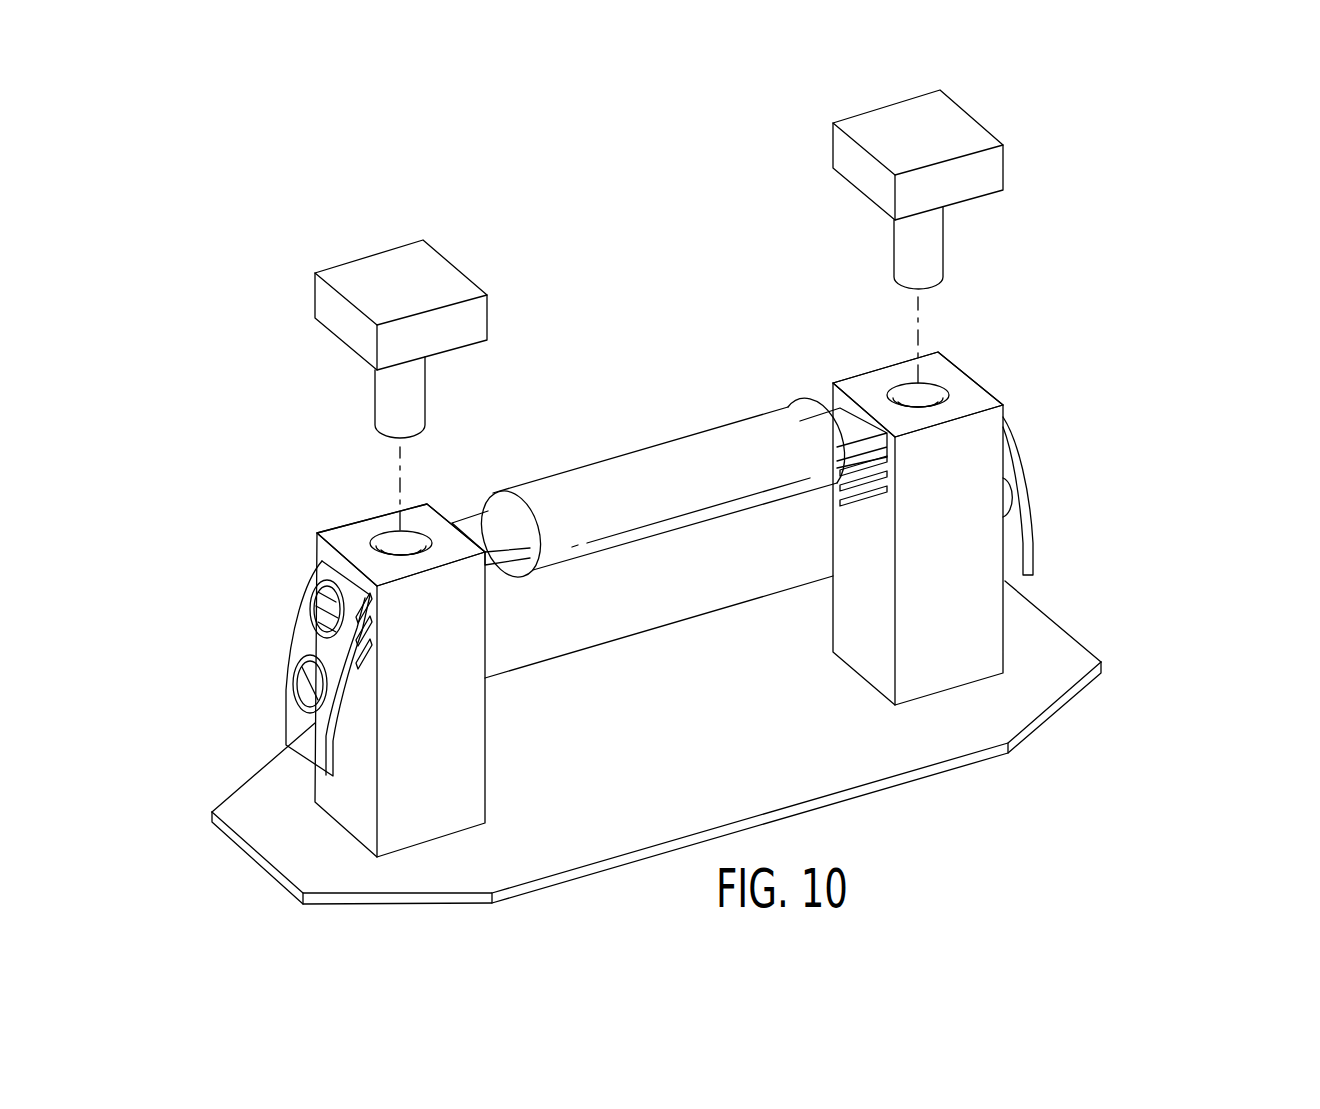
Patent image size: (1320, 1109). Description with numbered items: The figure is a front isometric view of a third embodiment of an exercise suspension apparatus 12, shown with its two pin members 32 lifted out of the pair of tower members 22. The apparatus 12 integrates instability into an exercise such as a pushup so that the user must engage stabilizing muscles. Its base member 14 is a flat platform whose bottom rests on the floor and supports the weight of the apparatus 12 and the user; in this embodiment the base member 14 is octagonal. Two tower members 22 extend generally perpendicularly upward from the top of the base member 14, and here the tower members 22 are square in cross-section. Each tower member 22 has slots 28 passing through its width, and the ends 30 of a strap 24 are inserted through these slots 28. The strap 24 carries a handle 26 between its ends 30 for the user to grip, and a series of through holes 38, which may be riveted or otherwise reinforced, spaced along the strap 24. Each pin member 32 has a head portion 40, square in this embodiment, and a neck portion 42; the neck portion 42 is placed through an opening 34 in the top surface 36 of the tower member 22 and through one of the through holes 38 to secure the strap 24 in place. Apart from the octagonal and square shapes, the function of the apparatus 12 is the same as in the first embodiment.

The exercise suspension apparatus 12 is at (1207, 155).
The base member 14 is at (688, 732).
The tower members 22 is at (449, 730).
The strap 24 is at (465, 506).
The handle 26 is at (674, 491).
The slots 28 is at (381, 631).
The ends 30 is at (660, 589).
The pin member 32 is at (662, 310).
The opening 34 is at (380, 536).
The top surface 36 is at (424, 512).
The through holes 38 is at (312, 612).
The head portion 40 is at (413, 299).
The neck portion 42 is at (414, 411).